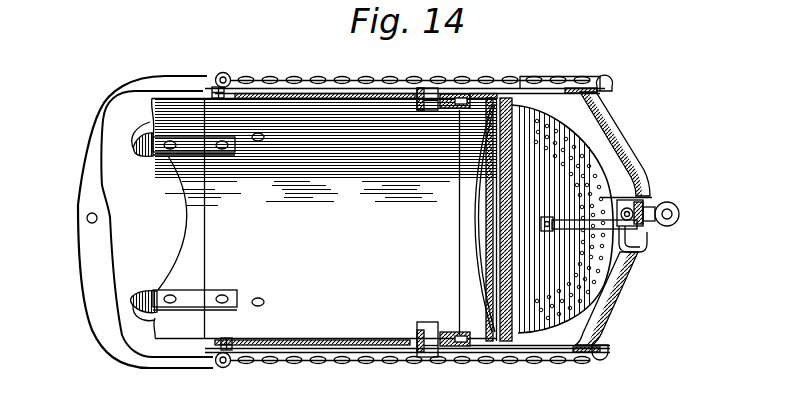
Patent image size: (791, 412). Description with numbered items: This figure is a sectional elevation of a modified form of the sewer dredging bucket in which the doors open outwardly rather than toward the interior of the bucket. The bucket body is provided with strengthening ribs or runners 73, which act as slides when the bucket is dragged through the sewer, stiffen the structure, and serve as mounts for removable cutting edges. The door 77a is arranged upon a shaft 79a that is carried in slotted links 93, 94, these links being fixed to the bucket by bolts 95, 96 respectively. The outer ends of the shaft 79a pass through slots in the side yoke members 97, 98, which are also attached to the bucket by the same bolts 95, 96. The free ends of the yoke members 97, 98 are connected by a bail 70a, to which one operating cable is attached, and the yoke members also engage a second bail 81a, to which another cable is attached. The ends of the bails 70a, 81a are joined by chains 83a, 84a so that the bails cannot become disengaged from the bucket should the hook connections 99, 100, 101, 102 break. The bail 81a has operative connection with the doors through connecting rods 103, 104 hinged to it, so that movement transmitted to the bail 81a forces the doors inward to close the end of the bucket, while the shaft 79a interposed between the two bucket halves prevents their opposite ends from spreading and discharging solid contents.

The bail 70a is at (84, 268).
The strengthening ribs or runners 73 is at (148, 154).
The door 77a is at (597, 162).
The shaft 79a is at (488, 212).
The bail 81a is at (632, 268).
The chain 83a is at (292, 78).
The chain 84a is at (294, 364).
The slotted link 93 is at (462, 103).
The slotted link 94 is at (457, 343).
The bolt 95 is at (423, 92).
The bolt 96 is at (421, 330).
The side yoke member 97 is at (549, 92).
The side yoke member 98 is at (553, 348).
The hook connection 99 is at (215, 88).
The hook connection 100 is at (222, 345).
The hook connection 101 is at (607, 75).
The hook connection 102 is at (606, 360).
The connecting rod 103 is at (638, 242).
The connecting rod 104 is at (662, 202).